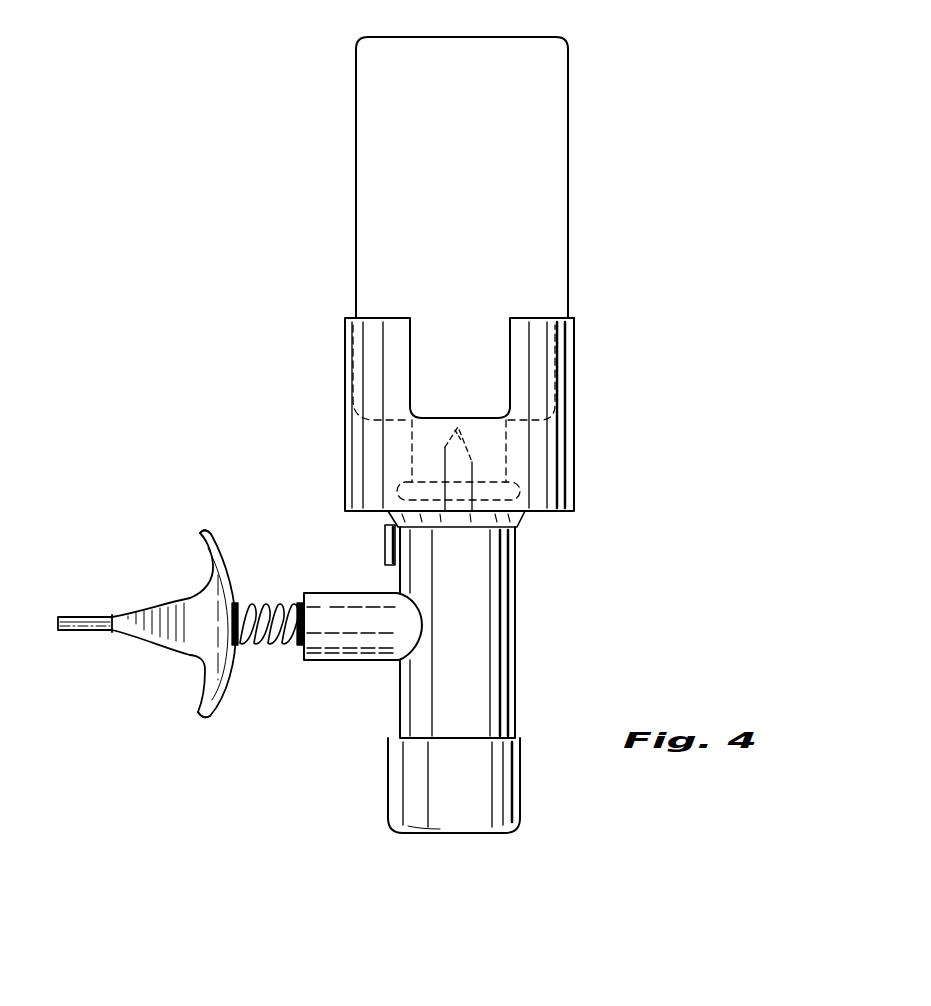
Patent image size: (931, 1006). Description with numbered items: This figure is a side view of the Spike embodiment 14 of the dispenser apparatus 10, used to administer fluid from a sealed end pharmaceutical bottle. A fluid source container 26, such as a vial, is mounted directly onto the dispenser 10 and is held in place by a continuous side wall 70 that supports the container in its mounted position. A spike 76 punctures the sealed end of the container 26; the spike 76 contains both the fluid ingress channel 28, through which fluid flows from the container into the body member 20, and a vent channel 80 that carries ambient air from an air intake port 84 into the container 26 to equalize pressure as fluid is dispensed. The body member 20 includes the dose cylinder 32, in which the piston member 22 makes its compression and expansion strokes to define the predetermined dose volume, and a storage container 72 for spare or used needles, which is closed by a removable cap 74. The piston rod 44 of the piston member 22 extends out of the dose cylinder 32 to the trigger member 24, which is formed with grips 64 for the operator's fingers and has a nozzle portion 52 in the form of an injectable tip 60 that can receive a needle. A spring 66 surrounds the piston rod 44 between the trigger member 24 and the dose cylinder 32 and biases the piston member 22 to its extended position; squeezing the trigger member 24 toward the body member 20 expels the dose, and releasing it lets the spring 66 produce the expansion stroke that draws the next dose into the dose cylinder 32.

The dispenser apparatus 10 is at (262, 282).
The Spike embodiment 14 is at (637, 430).
The body member 20 is at (367, 705).
The piston member 22 is at (153, 626).
The trigger member 24 is at (134, 627).
The fluid source container 26 is at (477, 193).
The fluid ingress channel 28 is at (463, 455).
The dose cylinder 32 is at (340, 660).
The piston rod 44 is at (285, 600).
The nozzle portion 52 is at (150, 650).
The injectable tip 60 is at (72, 632).
The grips 64 is at (200, 548).
The spring 66 is at (262, 645).
The continuous side wall 70 is at (575, 378).
The storage container 72 is at (516, 596).
The removable cap 74 is at (474, 785).
The spike 76 is at (447, 345).
The vent channel 80 is at (445, 448).
The air intake port 84 is at (385, 548).